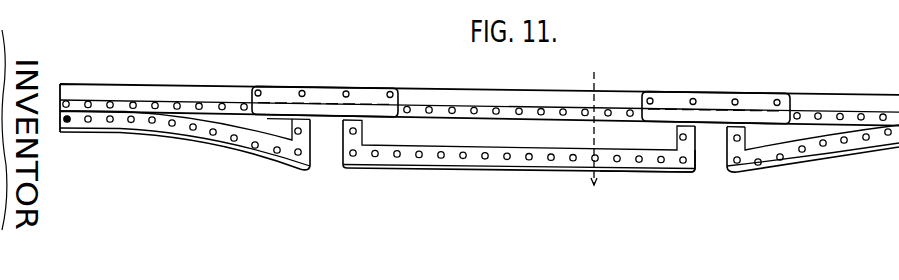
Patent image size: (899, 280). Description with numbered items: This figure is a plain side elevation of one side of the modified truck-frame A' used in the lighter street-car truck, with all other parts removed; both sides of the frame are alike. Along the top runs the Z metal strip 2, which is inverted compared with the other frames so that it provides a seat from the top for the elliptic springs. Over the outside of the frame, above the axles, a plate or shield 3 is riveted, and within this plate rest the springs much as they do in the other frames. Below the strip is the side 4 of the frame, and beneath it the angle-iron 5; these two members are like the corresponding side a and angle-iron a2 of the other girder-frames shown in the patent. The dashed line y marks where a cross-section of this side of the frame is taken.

The truck-frame A' is at (479, 100).
The Z metal strip 2 is at (450, 100).
The plate or shield 3 is at (320, 98).
The side 4 is at (506, 134).
The angle-iron 5 is at (519, 157).
The side a is at (479, 122).
The angle-iron a2 is at (642, 173).
The section line y- y is at (593, 127).